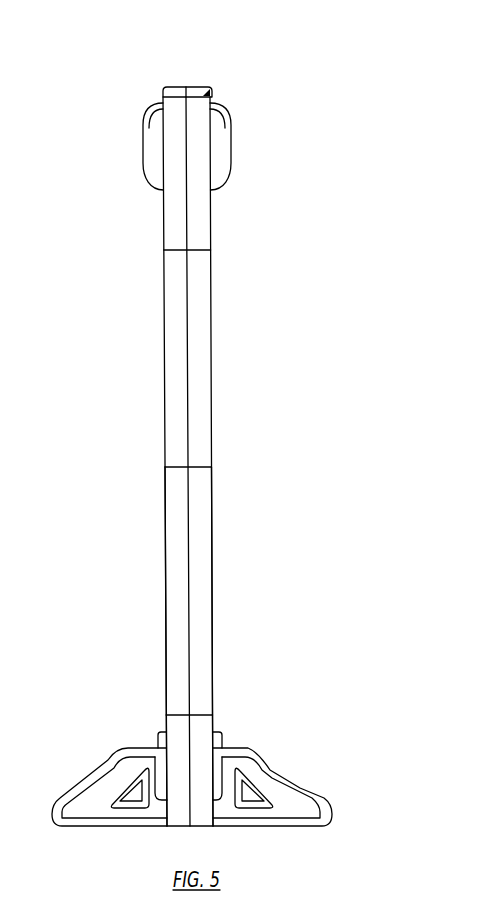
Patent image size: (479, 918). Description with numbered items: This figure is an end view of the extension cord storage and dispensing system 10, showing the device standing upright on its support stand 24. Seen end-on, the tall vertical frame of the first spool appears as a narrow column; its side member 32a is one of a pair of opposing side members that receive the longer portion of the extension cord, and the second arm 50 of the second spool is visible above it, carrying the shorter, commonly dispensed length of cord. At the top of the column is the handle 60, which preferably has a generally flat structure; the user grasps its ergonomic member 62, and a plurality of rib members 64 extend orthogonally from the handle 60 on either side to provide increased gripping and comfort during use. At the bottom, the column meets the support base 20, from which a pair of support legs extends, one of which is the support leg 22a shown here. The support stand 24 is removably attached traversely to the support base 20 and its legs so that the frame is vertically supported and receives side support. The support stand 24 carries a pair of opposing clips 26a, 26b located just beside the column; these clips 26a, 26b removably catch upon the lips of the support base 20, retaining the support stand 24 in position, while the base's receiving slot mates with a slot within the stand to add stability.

The extension cord storage and dispensing system 10 is at (288, 85).
The support base 20 is at (317, 788).
The support leg 22a is at (207, 742).
The support stand 24 is at (285, 790).
The clip 26a is at (158, 742).
The clip 26b is at (218, 735).
The side member 32a is at (205, 610).
The second arm 50 is at (187, 235).
The handle 60 is at (207, 92).
The ergonomic member 62 is at (182, 88).
The rib members 64 is at (229, 150).